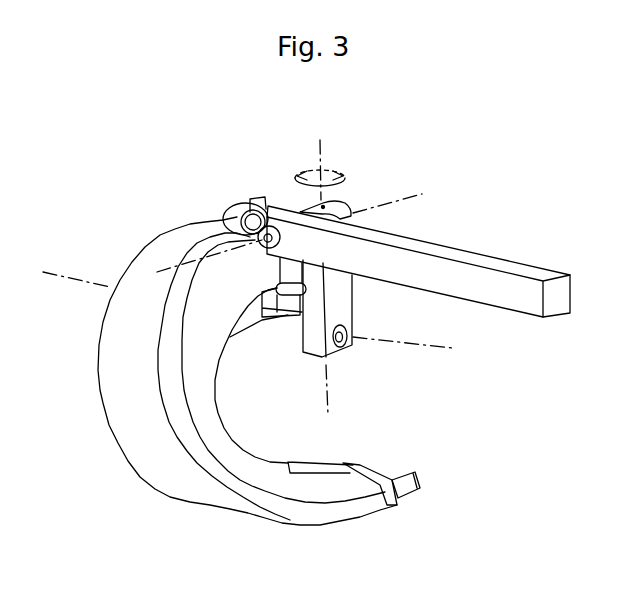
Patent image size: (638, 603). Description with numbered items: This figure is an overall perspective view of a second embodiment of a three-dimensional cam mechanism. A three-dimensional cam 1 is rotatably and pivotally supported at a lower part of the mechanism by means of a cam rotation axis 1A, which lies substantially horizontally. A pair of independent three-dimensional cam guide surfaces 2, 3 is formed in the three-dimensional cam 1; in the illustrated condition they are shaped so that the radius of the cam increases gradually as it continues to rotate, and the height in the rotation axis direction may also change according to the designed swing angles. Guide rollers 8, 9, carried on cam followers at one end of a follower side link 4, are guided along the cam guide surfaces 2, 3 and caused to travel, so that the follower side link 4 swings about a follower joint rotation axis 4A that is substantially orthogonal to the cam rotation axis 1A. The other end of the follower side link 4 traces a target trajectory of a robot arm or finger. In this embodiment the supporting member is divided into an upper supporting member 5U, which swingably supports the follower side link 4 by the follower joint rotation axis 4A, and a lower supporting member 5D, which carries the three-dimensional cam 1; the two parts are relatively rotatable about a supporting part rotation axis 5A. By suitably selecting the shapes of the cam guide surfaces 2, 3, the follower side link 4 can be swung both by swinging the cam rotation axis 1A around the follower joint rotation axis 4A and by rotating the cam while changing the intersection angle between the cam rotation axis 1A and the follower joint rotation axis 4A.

The three-dimensional cam 1 is at (233, 371).
The cam rotation axis 1A is at (252, 321).
The cam guide surface 2 is at (173, 332).
The cam guide surface 3 is at (274, 348).
The follower side link 4 is at (460, 278).
The follower joint rotation axis 4A is at (314, 222).
The supporting part rotation axis 5A is at (320, 258).
The upper supporting member 5U is at (340, 202).
The lower supporting member 5D is at (340, 305).
The guide roller 8 is at (240, 206).
The guide roller 9 is at (284, 349).